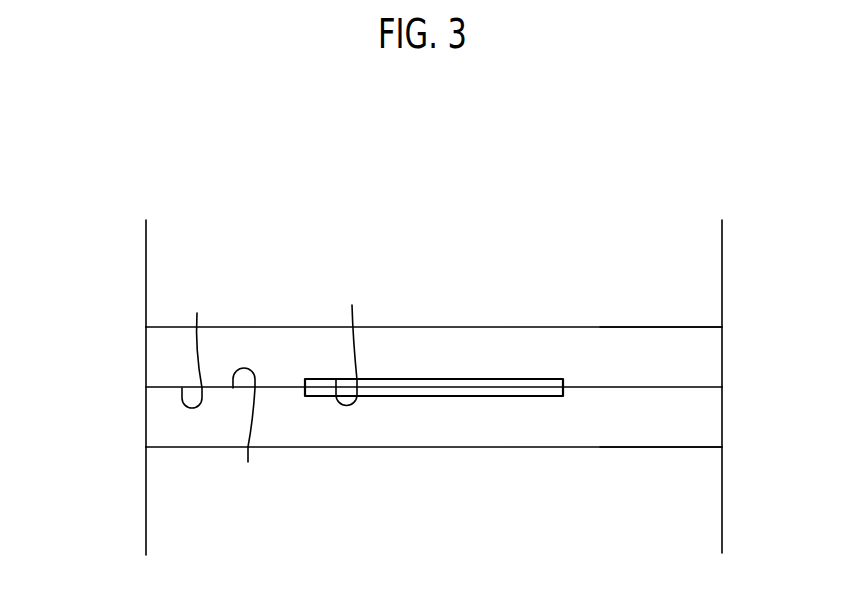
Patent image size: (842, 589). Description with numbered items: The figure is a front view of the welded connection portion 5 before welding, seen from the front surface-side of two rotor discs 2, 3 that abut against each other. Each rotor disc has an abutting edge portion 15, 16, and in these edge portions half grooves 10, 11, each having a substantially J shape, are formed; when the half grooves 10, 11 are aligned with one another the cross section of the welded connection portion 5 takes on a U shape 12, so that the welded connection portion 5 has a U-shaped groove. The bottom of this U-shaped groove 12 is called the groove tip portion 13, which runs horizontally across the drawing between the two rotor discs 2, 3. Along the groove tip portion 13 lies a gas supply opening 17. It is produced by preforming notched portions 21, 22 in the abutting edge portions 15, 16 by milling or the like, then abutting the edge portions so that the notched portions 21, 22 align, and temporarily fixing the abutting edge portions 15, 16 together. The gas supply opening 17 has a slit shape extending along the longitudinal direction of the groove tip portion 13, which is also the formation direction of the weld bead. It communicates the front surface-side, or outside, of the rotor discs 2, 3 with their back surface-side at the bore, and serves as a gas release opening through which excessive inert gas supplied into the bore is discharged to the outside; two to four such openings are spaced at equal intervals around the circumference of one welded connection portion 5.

The rotor disc 2 is at (131, 282).
The rotor disc 3 is at (131, 517).
The welded connection portion 5 is at (88, 391).
The half groove 10 is at (683, 327).
The half groove 11 is at (685, 447).
The U-shaped groove 12 is at (491, 386).
The groove tip portion 13 is at (629, 348).
The abutting edge portion 15 is at (195, 344).
The abutting edge portion 16 is at (246, 432).
The gas supply opening 17 is at (434, 314).
The notched portion 21 is at (349, 340).
The notched portion 22 is at (417, 396).